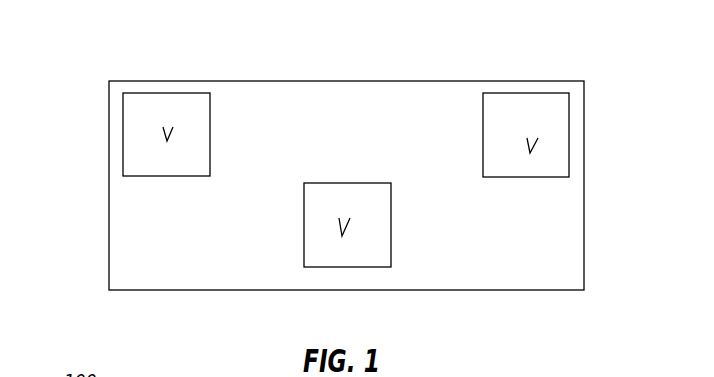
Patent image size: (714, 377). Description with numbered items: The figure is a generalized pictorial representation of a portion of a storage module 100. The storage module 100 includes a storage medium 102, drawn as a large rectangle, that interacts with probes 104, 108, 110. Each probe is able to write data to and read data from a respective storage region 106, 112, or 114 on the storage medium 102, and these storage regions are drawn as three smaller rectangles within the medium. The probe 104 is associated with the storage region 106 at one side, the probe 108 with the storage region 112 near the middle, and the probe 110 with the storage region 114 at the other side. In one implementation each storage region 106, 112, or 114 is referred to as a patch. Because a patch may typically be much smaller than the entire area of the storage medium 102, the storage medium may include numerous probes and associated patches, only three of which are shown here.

The storage module 100 is at (116, 51).
The storage medium 102 is at (346, 170).
The probe 104 is at (109, 111).
The storage region 106 is at (121, 158).
The probe 108 is at (399, 267).
The probe 110 is at (588, 130).
The storage region 112 is at (355, 257).
The storage region 114 is at (563, 156).